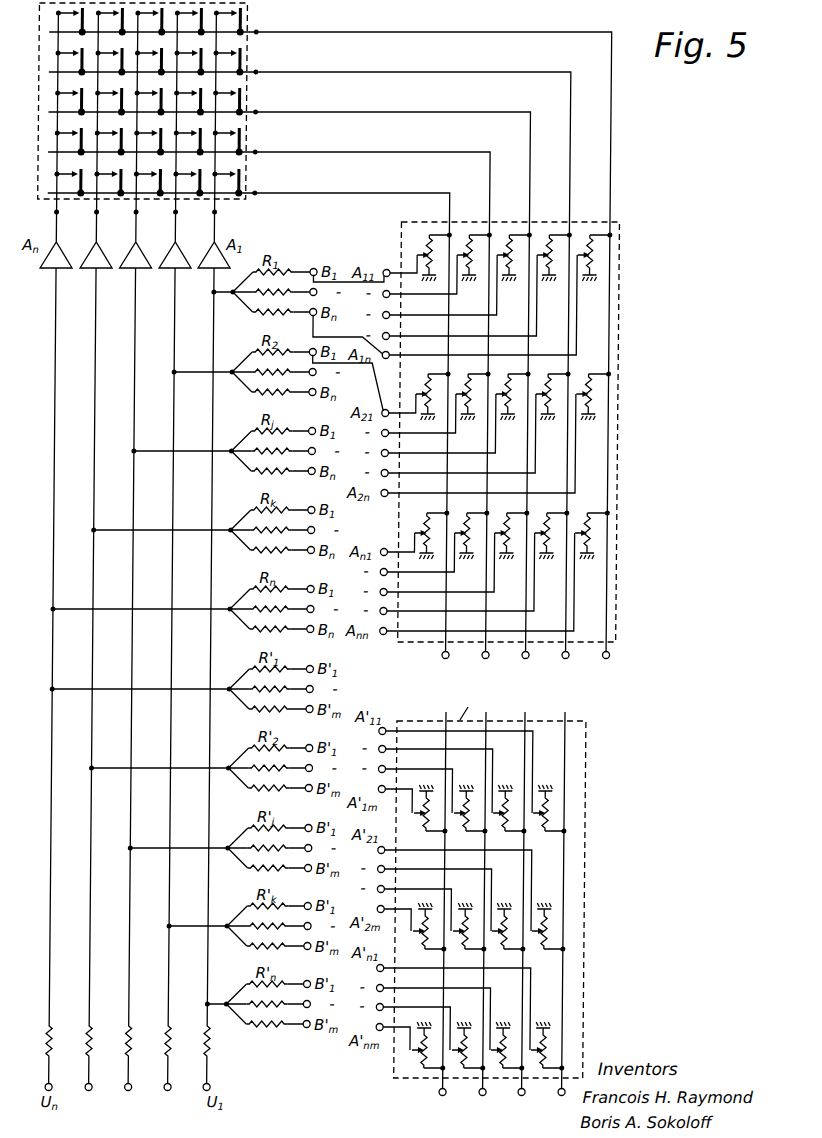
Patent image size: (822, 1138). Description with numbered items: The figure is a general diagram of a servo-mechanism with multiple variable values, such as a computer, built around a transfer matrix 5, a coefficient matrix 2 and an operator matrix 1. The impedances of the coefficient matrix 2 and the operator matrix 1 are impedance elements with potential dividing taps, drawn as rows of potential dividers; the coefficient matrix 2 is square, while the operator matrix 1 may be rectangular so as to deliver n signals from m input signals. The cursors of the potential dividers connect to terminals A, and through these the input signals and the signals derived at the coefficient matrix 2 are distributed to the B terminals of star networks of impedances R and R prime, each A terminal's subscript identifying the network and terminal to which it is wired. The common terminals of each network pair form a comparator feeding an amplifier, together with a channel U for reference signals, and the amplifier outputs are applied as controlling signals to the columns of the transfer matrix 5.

The operator matrix 1 is at (582, 762).
The coefficient matrix 2 is at (380, 217).
The transfer matrix 5 is at (240, 198).